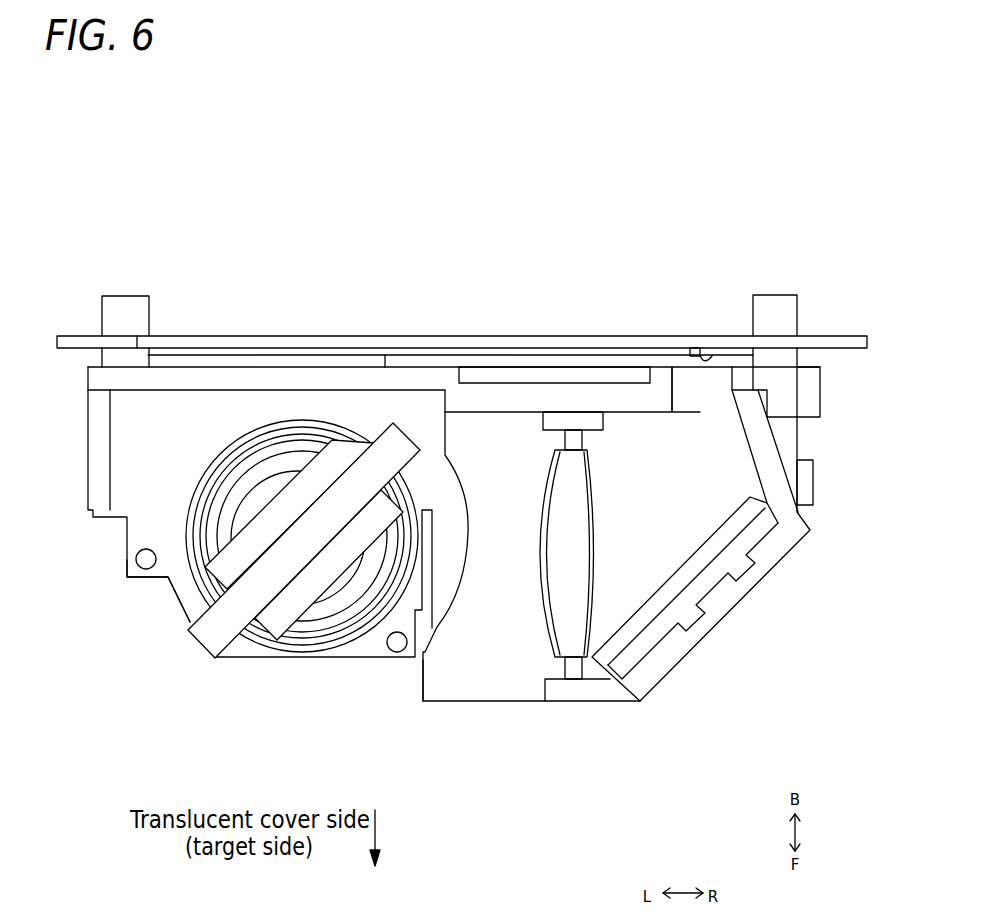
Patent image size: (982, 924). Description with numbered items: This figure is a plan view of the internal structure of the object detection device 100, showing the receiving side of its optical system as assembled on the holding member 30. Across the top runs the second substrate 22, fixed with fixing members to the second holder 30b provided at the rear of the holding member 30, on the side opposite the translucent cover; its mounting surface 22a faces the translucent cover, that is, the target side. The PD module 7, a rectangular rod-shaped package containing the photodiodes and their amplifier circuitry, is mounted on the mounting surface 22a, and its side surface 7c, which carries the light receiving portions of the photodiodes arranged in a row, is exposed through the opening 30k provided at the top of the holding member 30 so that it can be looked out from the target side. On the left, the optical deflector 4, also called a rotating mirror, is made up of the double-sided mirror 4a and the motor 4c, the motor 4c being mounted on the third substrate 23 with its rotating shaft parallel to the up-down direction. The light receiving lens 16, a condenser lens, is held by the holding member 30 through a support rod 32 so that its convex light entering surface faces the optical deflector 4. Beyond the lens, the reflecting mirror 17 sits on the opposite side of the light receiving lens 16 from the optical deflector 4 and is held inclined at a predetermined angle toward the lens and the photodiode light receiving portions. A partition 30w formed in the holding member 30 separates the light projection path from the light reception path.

The optical scanning device 100 is at (157, 194).
The optical deflector 4 is at (203, 645).
The double-sided mirror 4a is at (304, 540).
The motor 4c is at (343, 643).
The PD module 7 is at (680, 346).
The side surface 7c is at (708, 348).
The light receiving lens 16 is at (546, 492).
The reflecting mirror 17 is at (680, 570).
The second substrate 22 is at (551, 336).
The mounting surface 22a is at (648, 352).
The third substrate 23 is at (170, 598).
The holding member 30 is at (440, 703).
The second holder 30b is at (100, 358).
The opening 30k is at (690, 385).
The partition 30w is at (486, 674).
The support rod 32 is at (563, 443).